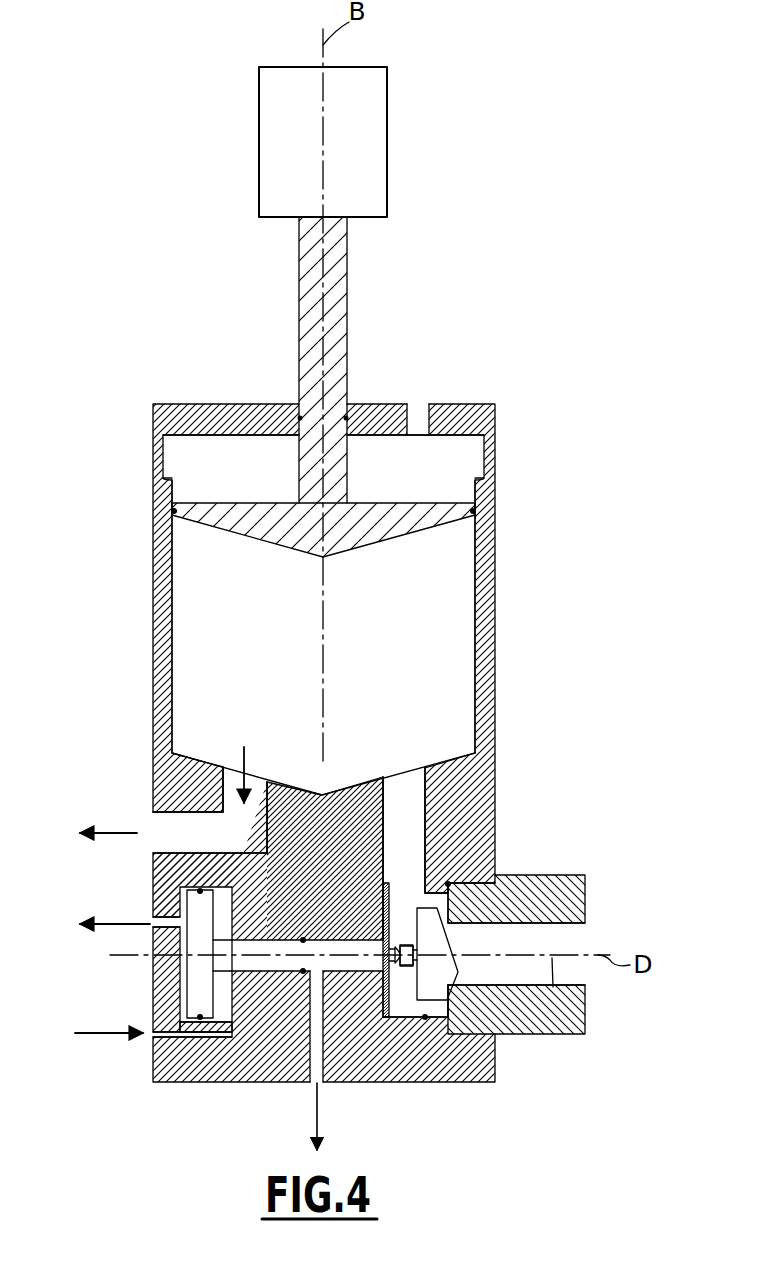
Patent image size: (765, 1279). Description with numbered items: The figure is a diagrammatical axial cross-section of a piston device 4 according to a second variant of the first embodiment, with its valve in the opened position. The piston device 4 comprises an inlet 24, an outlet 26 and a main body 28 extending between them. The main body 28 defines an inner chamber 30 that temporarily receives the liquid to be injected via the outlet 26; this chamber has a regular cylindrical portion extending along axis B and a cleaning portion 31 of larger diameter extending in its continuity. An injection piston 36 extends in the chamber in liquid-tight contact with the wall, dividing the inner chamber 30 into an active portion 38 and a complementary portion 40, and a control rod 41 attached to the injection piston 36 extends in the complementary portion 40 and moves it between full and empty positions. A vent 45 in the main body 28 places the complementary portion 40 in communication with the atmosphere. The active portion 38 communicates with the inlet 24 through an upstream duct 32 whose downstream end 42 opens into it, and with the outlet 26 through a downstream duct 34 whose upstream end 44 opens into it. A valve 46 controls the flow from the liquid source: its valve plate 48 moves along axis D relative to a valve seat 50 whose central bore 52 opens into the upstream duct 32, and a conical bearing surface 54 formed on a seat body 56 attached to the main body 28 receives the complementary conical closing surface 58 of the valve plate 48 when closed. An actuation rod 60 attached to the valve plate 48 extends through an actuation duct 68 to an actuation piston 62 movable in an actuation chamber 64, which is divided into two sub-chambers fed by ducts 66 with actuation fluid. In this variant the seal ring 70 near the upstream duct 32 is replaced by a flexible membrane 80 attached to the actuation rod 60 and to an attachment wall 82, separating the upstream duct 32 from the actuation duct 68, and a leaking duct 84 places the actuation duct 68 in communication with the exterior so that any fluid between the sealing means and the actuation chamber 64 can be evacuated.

The piston device 4 is at (103, 1092).
The inlet 24 is at (583, 976).
The outlet 26 is at (170, 825).
The main body 28 is at (490, 632).
The inner chamber 30 is at (187, 590).
The cleaning portion 31 is at (190, 458).
The upstream duct 32 is at (412, 827).
The downstream duct 34 is at (190, 780).
The injection piston 36 is at (423, 520).
The active portion 38 is at (435, 672).
The complementary portion 40 is at (430, 470).
The control rod 41 is at (313, 316).
The downstream end 42 is at (405, 835).
The upstream end 44 is at (252, 772).
The vent 45 is at (420, 416).
The valve 46 is at (425, 1018).
The valve plate 48 is at (428, 973).
The valve seat 50 is at (465, 998).
The central bore 52 is at (565, 1005).
The bearing surface 54 is at (447, 888).
The seat body 56 is at (560, 897).
The closing surface 58 is at (447, 933).
The actuation rod 60 is at (292, 960).
The actuation piston 62 is at (195, 963).
The actuation chamber 64 is at (220, 993).
The ducts 66 is at (170, 922).
The actuation duct 68 is at (303, 973).
The seal ring 70 is at (303, 938).
The flexible membrane 80 is at (395, 905).
The attachment wall 82 is at (440, 775).
The leaking duct 84 is at (317, 1075).